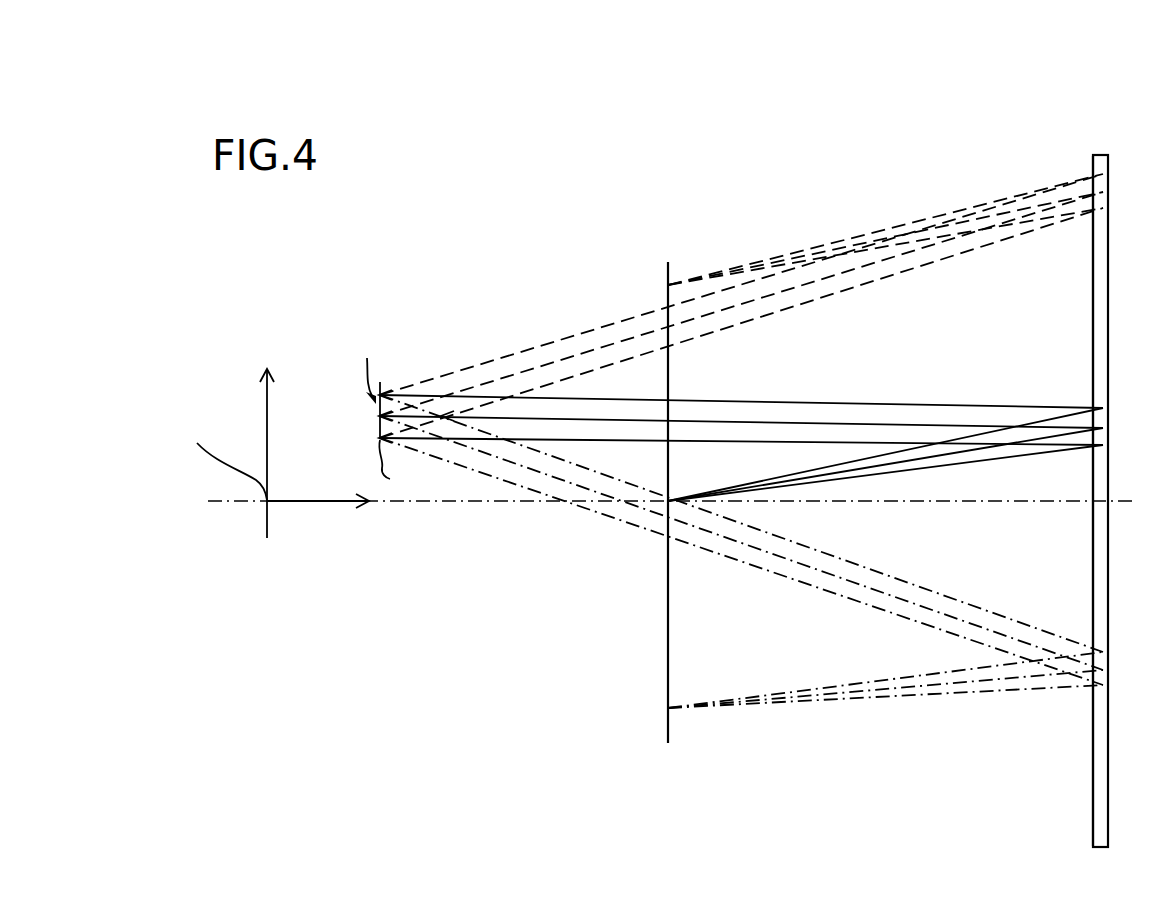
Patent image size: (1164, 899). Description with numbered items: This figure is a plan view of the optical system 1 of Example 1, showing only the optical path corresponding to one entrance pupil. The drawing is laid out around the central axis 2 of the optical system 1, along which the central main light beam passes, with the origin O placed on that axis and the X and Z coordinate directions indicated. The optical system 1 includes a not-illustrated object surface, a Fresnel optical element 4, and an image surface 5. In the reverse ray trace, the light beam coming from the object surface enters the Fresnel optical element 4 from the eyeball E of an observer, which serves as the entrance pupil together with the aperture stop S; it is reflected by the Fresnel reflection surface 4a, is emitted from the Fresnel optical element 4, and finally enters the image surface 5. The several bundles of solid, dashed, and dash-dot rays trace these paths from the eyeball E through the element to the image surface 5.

The optical system 1 is at (912, 94).
The central axis 2 is at (662, 502).
The Fresnel optical element 4 is at (1101, 548).
The Fresnel reflection surface 4a is at (1108, 755).
The image surface 5 is at (667, 272).